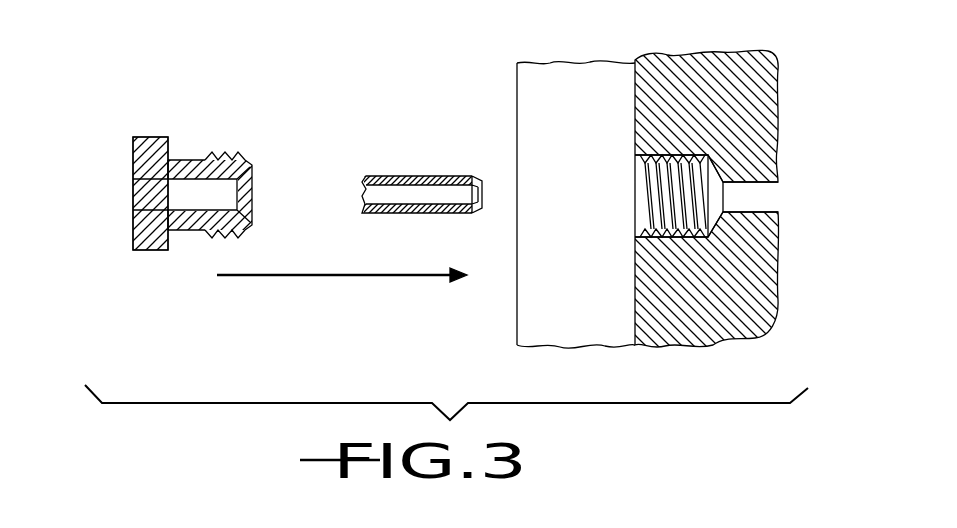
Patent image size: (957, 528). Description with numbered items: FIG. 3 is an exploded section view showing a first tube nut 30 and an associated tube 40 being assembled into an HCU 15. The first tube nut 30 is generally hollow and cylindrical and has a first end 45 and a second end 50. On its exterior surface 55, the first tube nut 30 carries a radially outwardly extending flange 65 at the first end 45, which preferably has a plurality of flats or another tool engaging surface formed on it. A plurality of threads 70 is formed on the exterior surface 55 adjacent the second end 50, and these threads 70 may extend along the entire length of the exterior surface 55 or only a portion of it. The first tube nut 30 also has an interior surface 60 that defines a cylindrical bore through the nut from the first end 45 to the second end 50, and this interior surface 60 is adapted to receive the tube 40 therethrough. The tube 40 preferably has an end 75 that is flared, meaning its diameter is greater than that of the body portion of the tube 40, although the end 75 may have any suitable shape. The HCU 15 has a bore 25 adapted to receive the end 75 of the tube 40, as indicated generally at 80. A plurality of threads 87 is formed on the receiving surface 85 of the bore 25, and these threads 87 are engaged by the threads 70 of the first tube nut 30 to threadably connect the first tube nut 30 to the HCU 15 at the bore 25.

The HCU 15 is at (740, 106).
The bore 25 is at (650, 192).
The first tube nut 30 is at (174, 188).
The tube 40 is at (390, 176).
The first end 45 is at (120, 150).
The second end 50 is at (245, 155).
The exterior surface 55 is at (185, 232).
The interior surface 60 is at (222, 212).
The flange 65 is at (150, 250).
The threads 70 is at (215, 242).
The end 75 is at (475, 175).
The receipt of the tube end in the bore 80 is at (725, 195).
The receiving surface 85 is at (698, 155).
The threads 87 is at (698, 237).